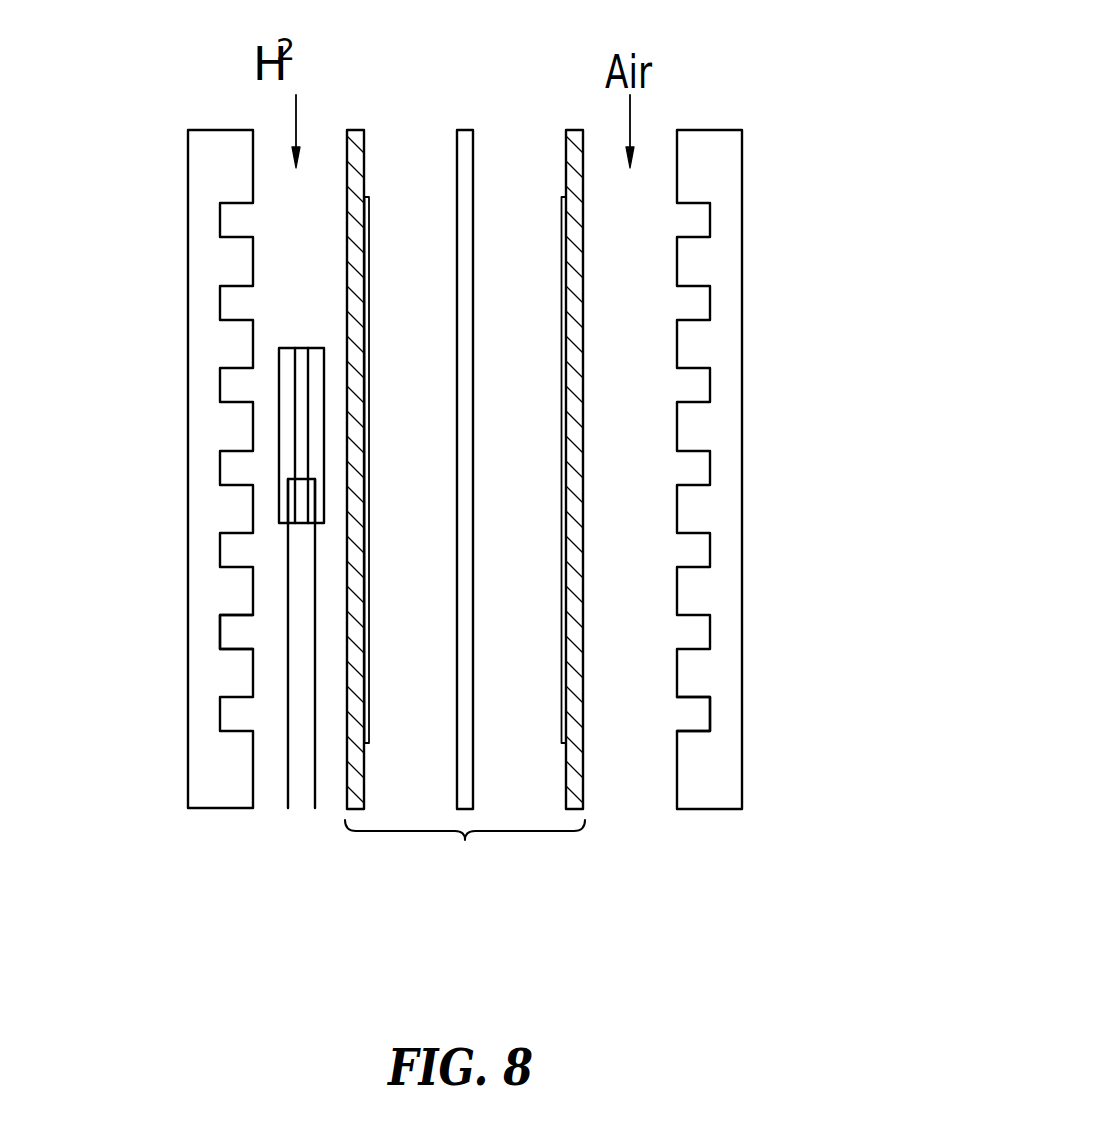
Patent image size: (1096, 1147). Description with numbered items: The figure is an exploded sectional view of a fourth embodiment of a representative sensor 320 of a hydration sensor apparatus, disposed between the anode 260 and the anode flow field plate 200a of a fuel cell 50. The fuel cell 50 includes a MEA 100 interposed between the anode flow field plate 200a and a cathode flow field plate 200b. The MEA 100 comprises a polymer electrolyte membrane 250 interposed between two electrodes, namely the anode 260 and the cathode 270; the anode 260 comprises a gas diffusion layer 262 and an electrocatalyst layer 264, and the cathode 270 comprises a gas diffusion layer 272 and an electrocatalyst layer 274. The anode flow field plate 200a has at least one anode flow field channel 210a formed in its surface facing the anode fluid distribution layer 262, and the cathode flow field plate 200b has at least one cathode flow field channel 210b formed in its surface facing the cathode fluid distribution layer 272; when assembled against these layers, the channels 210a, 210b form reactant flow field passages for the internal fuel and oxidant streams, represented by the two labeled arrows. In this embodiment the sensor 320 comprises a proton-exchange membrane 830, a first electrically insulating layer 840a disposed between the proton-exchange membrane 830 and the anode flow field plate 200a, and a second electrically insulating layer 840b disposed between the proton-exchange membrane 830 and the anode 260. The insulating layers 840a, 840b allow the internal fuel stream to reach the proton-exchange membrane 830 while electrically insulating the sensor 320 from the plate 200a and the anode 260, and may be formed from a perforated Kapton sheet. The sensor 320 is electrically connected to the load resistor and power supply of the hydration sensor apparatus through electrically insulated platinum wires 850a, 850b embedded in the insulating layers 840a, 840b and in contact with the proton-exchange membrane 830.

The fuel cell 50 is at (474, 446).
The MEA 100 is at (465, 836).
The anode flow field plate 200a is at (222, 791).
The cathode flow field plate 200b is at (713, 795).
The anode flow field channel 210a is at (228, 635).
The cathode flow field channel 210b is at (698, 713).
The polymer electrolyte membrane 250 is at (457, 809).
The anode 260 is at (319, 504).
The gas diffusion layer 262 is at (347, 258).
The electrocatalyst layer 264 is at (368, 238).
The cathode 270 is at (624, 501).
The gas diffusion layer 272 is at (583, 235).
The electrocatalyst layer 274 is at (562, 238).
The sensor 320 is at (193, 507).
The proton-exchange membrane 830 is at (303, 348).
The first electrically insulating layer 840a is at (288, 387).
The second electrically insulating layer 840b is at (318, 437).
The electrically insulated platinum wire 850a is at (288, 683).
The electrically insulated platinum wire 850b is at (315, 704).